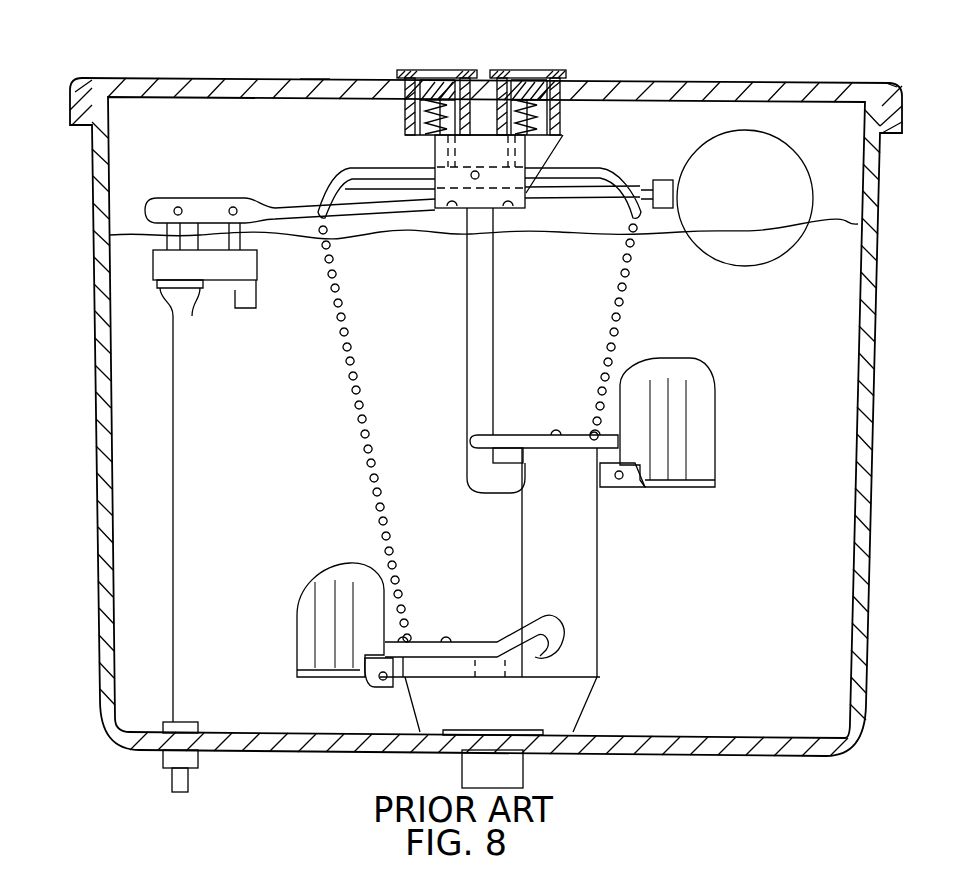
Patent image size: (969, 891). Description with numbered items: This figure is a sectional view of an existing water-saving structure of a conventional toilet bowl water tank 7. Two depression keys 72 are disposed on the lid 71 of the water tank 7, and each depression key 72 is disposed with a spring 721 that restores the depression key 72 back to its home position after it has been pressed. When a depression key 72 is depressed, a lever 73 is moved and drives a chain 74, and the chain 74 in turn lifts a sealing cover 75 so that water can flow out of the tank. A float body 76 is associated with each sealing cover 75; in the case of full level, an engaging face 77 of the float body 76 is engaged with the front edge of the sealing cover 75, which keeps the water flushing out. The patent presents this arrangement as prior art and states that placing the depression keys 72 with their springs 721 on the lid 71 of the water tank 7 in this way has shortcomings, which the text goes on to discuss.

The water tank 7 is at (95, 390).
The lid 71 is at (258, 79).
The depression key 72 is at (412, 70).
The spring 721 is at (518, 86).
The lever 73 is at (366, 174).
The chain 74 is at (338, 315).
The sealing cover 75 is at (522, 437).
The float body 76 is at (308, 583).
The engaging face 77 is at (376, 596).